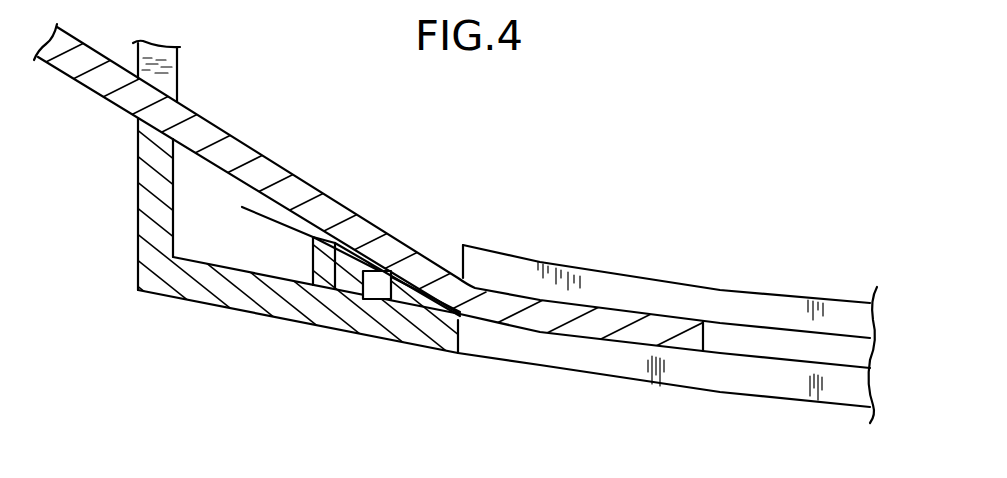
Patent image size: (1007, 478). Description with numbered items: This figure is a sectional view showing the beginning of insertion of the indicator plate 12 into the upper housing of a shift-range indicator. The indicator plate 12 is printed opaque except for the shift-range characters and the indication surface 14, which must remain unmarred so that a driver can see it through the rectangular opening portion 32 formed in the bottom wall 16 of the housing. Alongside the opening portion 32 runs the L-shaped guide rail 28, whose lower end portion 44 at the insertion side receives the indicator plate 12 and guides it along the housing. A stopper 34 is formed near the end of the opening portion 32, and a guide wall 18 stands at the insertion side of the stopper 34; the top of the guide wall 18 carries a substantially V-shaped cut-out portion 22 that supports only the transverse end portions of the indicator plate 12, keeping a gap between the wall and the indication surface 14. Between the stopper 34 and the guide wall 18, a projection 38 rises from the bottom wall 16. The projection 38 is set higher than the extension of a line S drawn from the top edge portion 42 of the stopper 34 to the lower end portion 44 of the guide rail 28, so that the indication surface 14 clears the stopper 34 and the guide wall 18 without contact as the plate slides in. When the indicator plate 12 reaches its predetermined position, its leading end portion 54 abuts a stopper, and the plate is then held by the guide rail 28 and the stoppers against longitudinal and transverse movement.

The indicator plate 12 is at (376, 222).
The indication surface 14 is at (398, 313).
The bottom wall 16 is at (193, 303).
The guide wall 18 is at (137, 218).
The cut-out portion 22 is at (152, 138).
The guide rail 28 is at (710, 287).
The opening portion 32 is at (618, 365).
The stopper 34 is at (373, 287).
The projection 38 is at (288, 283).
The top edge portion 42 is at (330, 300).
The lower end portion 44 is at (457, 318).
The leading end portion 54 is at (704, 347).
The line S is at (253, 214).